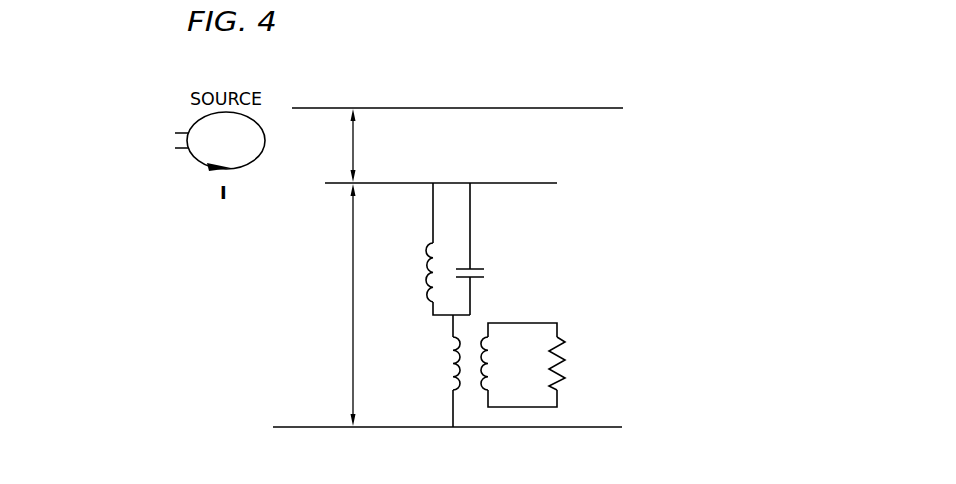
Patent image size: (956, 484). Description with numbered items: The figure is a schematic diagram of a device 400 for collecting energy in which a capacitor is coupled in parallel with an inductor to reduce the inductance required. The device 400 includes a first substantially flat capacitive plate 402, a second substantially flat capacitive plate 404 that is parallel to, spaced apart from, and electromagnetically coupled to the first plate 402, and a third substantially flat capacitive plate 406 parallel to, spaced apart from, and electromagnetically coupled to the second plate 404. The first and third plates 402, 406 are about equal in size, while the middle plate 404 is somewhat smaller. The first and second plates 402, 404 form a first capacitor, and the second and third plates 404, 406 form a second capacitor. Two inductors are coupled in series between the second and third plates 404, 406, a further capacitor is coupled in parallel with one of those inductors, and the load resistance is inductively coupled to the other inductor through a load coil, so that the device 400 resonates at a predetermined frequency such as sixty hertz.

The device for collecting energy 400 is at (323, 88).
The first capacitive plate 402 is at (595, 106).
The second capacitive plate 404 is at (513, 181).
The third capacitive plate 406 is at (598, 428).